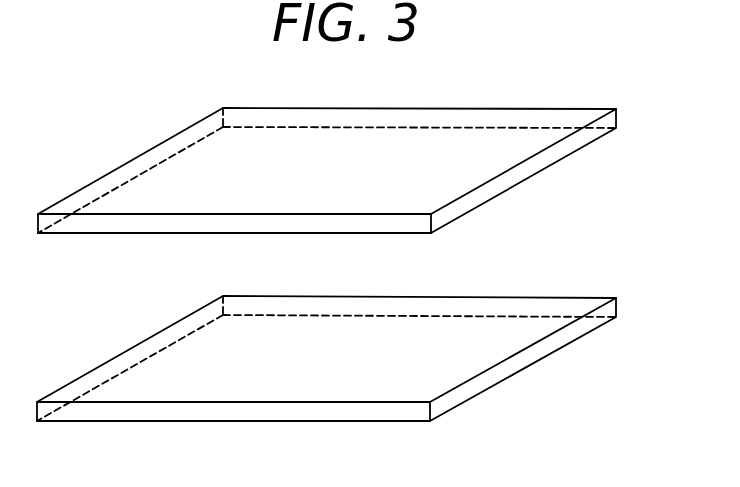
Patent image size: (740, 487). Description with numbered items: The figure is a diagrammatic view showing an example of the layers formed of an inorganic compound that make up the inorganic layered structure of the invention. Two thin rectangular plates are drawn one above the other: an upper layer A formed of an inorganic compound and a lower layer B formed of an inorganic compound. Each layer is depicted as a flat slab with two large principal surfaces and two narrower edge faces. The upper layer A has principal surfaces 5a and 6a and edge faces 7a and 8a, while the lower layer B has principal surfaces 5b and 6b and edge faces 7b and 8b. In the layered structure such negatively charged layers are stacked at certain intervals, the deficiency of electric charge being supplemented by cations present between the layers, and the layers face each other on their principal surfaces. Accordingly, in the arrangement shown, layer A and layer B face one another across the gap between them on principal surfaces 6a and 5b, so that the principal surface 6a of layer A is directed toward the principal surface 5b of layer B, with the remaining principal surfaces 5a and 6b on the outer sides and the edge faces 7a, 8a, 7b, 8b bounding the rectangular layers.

The principal surface 5a is at (207, 197).
The principal surface 6a is at (407, 140).
The edge face 7a is at (118, 180).
The edge face 8a is at (563, 145).
The principal surface 5b is at (205, 387).
The principal surface 6b is at (437, 327).
The edge face 7b is at (117, 368).
The edge face 8b is at (563, 333).
The layer formed of an inorganic compound A is at (369, 167).
The layer formed of an inorganic compound B is at (369, 355).